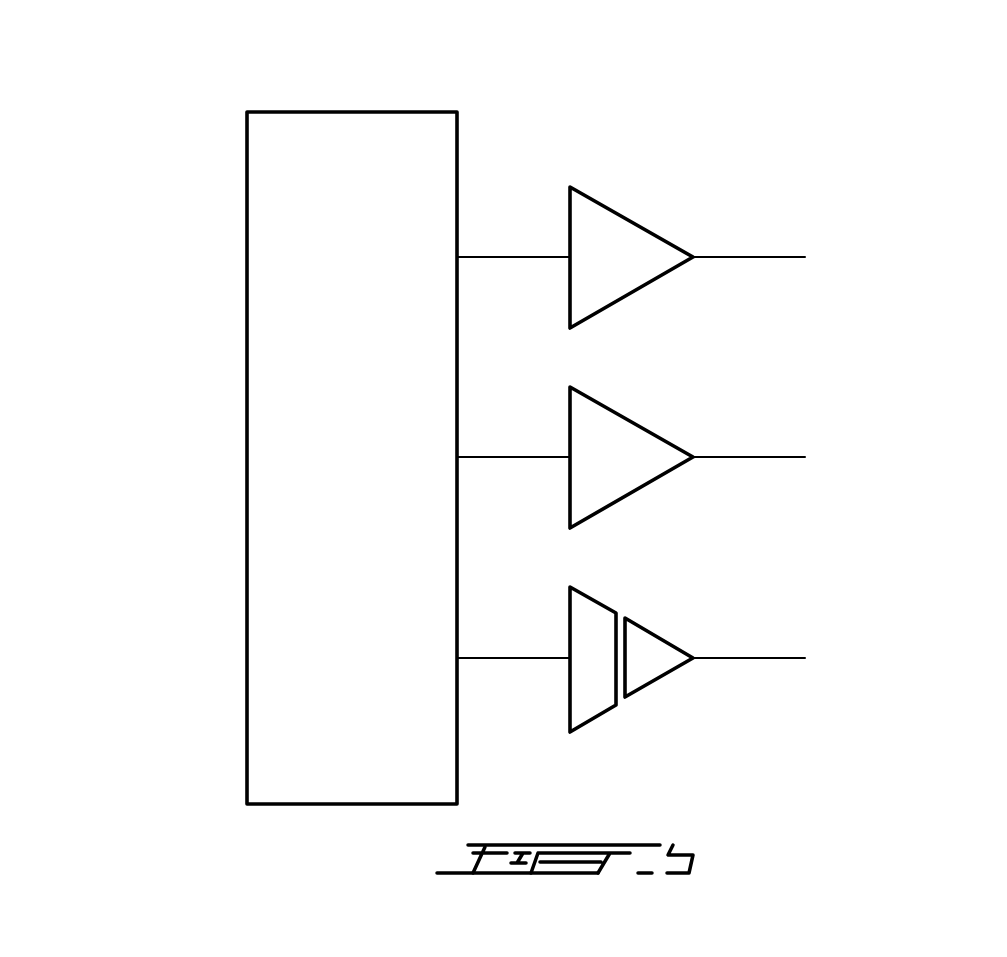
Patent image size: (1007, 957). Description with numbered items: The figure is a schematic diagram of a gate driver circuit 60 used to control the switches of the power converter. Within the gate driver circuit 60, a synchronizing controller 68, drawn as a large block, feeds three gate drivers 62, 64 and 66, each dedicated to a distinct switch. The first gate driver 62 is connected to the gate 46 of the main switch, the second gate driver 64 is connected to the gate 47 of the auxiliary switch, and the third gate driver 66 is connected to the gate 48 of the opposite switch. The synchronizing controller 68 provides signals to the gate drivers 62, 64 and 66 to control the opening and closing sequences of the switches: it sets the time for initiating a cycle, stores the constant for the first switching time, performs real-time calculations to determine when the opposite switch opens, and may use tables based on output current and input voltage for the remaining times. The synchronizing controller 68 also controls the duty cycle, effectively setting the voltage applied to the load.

The gate driver circuit 60 is at (861, 176).
The synchronizing controller 68 is at (247, 325).
The gate driver 62 is at (633, 218).
The gate driver 64 is at (632, 418).
The gate driver 66 is at (645, 625).
The gate of the main switch 46 is at (768, 262).
The gate of the auxiliary switch 47 is at (768, 462).
The gate of the opposite switch 48 is at (768, 663).